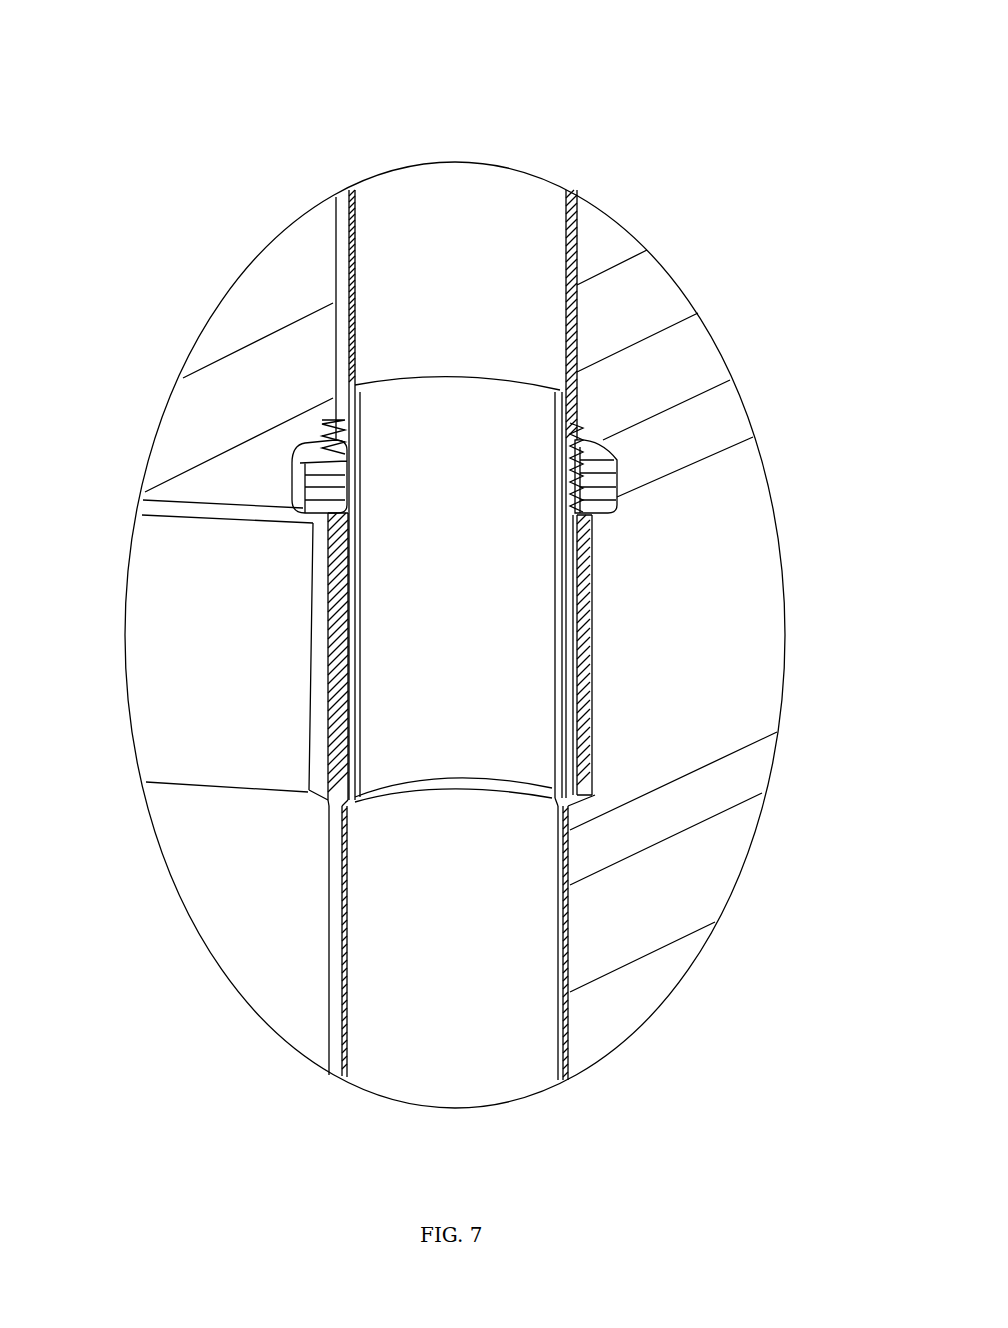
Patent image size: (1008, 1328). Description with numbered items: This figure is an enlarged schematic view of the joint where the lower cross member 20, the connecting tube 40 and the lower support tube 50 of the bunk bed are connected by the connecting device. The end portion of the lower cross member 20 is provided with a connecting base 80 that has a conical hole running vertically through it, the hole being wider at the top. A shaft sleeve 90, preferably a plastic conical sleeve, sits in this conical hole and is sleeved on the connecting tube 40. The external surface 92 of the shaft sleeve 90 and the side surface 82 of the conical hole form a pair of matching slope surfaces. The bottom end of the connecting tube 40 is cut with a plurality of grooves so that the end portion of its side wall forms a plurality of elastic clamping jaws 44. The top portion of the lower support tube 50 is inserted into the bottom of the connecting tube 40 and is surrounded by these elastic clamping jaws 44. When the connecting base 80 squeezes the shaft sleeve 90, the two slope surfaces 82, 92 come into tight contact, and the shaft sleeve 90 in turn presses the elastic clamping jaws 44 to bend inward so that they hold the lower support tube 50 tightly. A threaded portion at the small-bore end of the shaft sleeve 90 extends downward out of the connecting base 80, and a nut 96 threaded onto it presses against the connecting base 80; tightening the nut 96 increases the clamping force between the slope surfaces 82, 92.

The connecting tube 40 is at (455, 213).
The lower cross member 20 is at (250, 710).
The lower support tube 50 is at (497, 1055).
The nut 96 is at (617, 467).
The elastic clamping jaws 44 is at (592, 728).
The connecting base 80 is at (592, 572).
The side surface of the conical hole 82 is at (592, 608).
The external surface of the shaft sleeve 92 is at (592, 633).
The shaft sleeve 90 is at (573, 680).